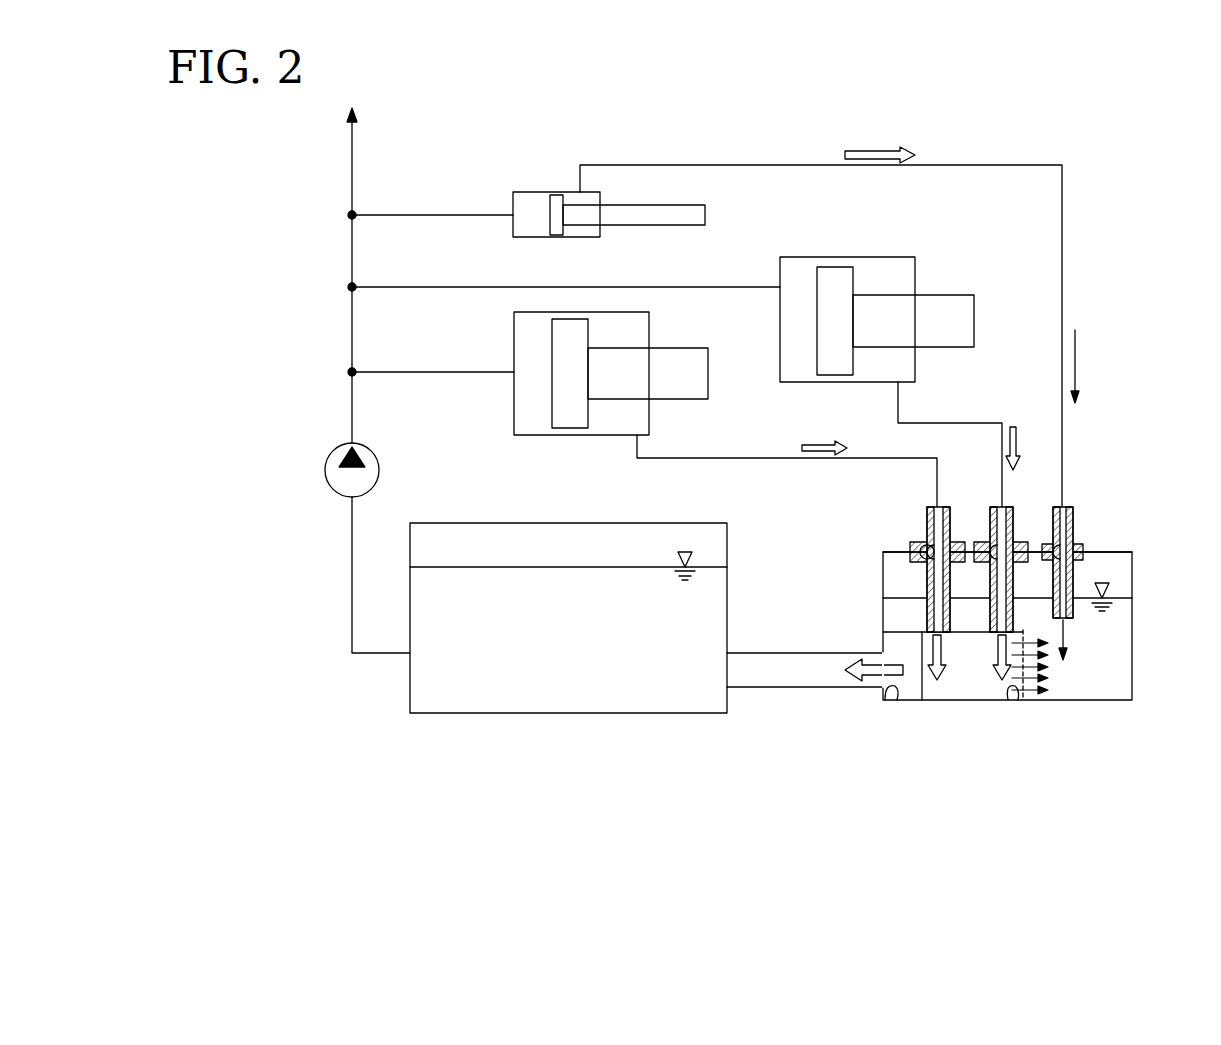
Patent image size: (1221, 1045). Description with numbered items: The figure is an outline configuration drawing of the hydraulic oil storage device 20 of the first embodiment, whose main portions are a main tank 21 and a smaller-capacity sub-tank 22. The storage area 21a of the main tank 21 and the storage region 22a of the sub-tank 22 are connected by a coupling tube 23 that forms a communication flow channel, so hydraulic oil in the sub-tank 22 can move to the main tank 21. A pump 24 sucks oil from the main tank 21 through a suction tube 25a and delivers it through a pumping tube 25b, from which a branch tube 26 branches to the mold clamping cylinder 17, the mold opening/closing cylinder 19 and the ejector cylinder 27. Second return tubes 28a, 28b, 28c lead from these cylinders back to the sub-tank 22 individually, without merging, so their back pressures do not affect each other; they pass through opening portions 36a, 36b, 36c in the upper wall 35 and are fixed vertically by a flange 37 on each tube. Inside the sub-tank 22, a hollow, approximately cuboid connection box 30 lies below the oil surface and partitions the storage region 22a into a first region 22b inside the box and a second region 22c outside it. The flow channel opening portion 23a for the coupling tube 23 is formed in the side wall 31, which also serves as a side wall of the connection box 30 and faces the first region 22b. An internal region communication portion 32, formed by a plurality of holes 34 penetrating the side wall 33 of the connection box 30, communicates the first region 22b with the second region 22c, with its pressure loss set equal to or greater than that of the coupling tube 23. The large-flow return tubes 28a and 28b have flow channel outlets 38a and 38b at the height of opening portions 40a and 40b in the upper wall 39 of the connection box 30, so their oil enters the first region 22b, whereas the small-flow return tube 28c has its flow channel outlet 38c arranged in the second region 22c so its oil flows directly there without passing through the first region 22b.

The mold clamping cylinder 17 is at (514, 407).
The mold opening/closing cylinder 19 is at (848, 257).
The hydraulic oil storage device 20 is at (742, 98).
The main tank 21 is at (556, 713).
The storage area 21a is at (522, 523).
The sub-tank 22 is at (1107, 700).
The storage region 22a is at (1113, 582).
The first region 22b is at (998, 687).
The second region 22c is at (1113, 668).
The coupling tube 23 is at (790, 687).
The flow channel opening portion 23a is at (889, 700).
The pump 24 is at (325, 469).
The suction tube 25a is at (352, 556).
The pumping tube 25b is at (352, 326).
The branch tube 26 is at (418, 215).
The ejector cylinder 27 is at (535, 192).
The second return tube 28a is at (765, 458).
The second return tube 28b is at (972, 423).
The second return tube 28c is at (1062, 247).
The connection box 30 is at (883, 610).
The side wall 31 is at (883, 570).
The internal region communication portion 32 is at (1034, 628).
The side wall 33 is at (1050, 700).
The holes 34 is at (1007, 700).
The upper wall 35 is at (903, 550).
The opening portion 36a is at (930, 545).
The opening portion 36b is at (993, 545).
The opening portion 36c is at (1063, 548).
The flange 37 is at (913, 545).
The flow channel outlet 38a is at (932, 633).
The flow channel outlet 38b is at (990, 633).
The flow channel outlet 38c is at (1072, 618).
The upper wall 39 is at (892, 618).
The opening portion 40a is at (930, 645).
The opening portion 40b is at (988, 640).